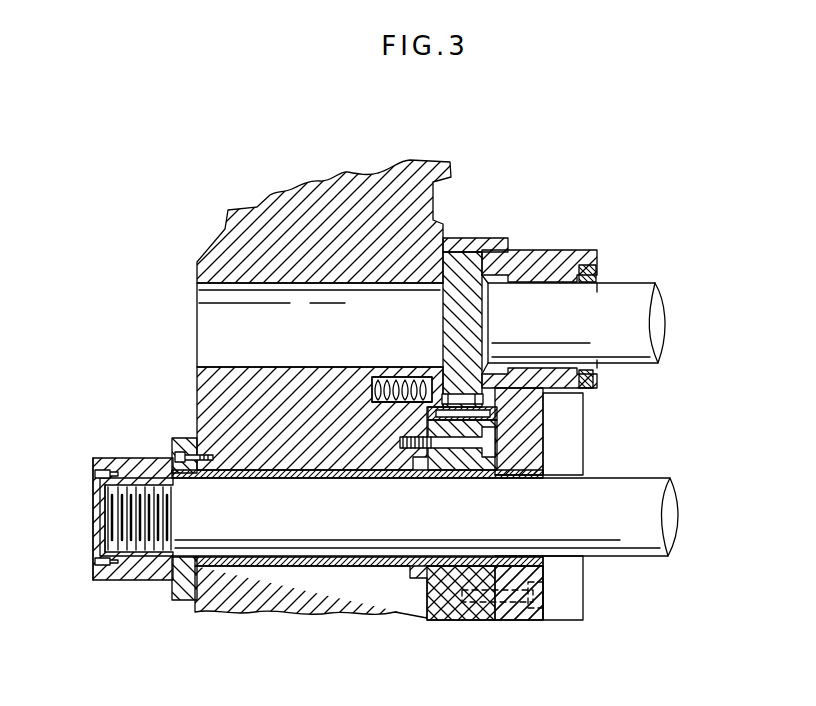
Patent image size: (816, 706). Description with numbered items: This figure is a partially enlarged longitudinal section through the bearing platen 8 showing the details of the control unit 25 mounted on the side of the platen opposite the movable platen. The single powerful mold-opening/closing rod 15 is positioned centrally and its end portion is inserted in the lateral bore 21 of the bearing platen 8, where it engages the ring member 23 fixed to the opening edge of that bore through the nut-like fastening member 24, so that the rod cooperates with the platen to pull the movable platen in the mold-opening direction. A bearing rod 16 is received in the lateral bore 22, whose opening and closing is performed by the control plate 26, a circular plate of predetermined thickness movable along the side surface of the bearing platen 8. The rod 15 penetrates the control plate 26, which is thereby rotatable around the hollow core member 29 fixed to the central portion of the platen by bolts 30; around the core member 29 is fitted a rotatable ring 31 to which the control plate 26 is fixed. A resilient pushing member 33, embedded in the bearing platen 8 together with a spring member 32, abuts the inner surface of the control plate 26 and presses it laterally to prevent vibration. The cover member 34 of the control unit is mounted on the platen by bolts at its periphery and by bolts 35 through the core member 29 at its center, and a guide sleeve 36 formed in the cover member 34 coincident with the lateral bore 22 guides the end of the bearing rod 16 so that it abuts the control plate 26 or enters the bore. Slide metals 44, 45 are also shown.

The bearing platen 8 is at (303, 218).
The powerful mold-opening/closing rod 15 is at (326, 528).
The bearing rod 16 is at (645, 315).
The lateral bore 21 is at (272, 472).
The lateral bore 22 is at (218, 333).
The ring member 23 is at (182, 440).
The nut-like fastening member 24 is at (124, 468).
The control unit 25 is at (607, 272).
The control plate 26 is at (455, 262).
The hollow core member 29 is at (452, 598).
The bolt 30 is at (492, 443).
The rotatable ring 31 is at (478, 413).
The spring member 32 is at (388, 384).
The resilient pushing member 33 is at (441, 397).
The cover member 34 is at (494, 240).
The bolt 35 is at (478, 600).
The guide sleeve 36 is at (547, 258).
The slide metal 44 is at (566, 278).
The slide metal 45 is at (252, 566).